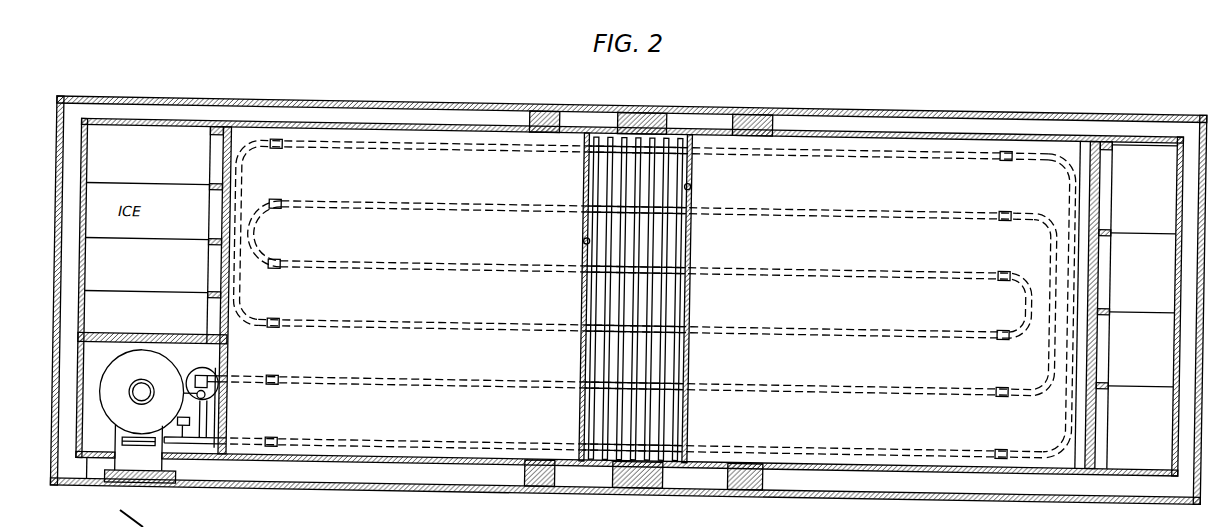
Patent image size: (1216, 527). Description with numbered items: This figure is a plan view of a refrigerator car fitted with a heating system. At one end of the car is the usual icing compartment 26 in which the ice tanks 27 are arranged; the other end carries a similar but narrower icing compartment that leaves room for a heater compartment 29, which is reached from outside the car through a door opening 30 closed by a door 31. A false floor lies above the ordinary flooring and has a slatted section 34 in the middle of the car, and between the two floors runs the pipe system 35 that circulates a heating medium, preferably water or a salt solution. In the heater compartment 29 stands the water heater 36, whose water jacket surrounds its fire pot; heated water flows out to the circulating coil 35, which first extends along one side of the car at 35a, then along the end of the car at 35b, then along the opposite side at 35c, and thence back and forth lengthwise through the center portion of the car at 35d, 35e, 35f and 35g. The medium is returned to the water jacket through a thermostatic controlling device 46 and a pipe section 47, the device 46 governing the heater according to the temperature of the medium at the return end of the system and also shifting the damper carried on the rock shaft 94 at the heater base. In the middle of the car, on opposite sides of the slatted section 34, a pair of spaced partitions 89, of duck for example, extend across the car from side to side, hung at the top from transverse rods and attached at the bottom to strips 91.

The icing compartment 26 is at (1104, 293).
The ice tanks 27 is at (1142, 266).
The heater compartment 29 is at (92, 432).
The door opening 30 is at (133, 458).
The door 31 is at (158, 478).
The slatted section 34 is at (698, 301).
The pipe system 35 is at (684, 293).
The circulating coil side section 35a is at (480, 458).
The circulating coil end section 35b is at (1068, 347).
The circulating coil opposite side section 35c is at (793, 150).
The circulating coil center run 35d is at (462, 323).
The circulating coil center run 35e is at (470, 266).
The circulating coil center run 35f is at (468, 205).
The circulating coil center run 35g is at (425, 383).
The water heater 36 is at (141, 391).
The thermostatic controlling device 46 is at (204, 374).
The pipe section 47 is at (206, 396).
The partitions 89 is at (696, 243).
The strips 91 is at (690, 187).
The rock shaft 94 is at (180, 447).